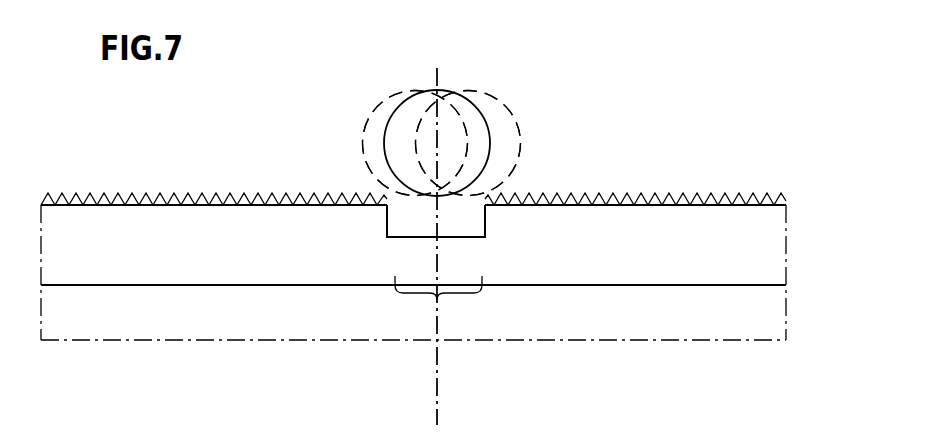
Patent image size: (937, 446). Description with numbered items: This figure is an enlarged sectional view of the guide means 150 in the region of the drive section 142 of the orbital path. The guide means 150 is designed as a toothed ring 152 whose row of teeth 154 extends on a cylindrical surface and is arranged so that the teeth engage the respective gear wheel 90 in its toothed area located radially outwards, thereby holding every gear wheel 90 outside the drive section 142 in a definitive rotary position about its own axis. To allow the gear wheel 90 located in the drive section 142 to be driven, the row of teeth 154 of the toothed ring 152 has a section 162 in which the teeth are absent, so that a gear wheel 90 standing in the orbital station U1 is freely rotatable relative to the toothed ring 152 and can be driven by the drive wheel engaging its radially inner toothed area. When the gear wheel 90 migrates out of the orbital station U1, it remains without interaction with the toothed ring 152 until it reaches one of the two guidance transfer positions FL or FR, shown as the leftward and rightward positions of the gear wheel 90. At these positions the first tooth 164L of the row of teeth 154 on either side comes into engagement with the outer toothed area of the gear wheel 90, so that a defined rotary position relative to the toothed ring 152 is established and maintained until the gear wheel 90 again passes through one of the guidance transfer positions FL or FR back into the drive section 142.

The gear wheel 90 is at (478, 92).
The drive section 142 is at (438, 305).
The guide means 150 is at (655, 257).
The toothed ring 152 is at (772, 223).
The row of teeth 154 is at (658, 197).
The section 162 is at (462, 237).
The first tooth 164L is at (385, 208).
The guidance transfer position FL is at (373, 112).
The guidance transfer position FR is at (521, 125).
The orbital station U1 is at (438, 377).